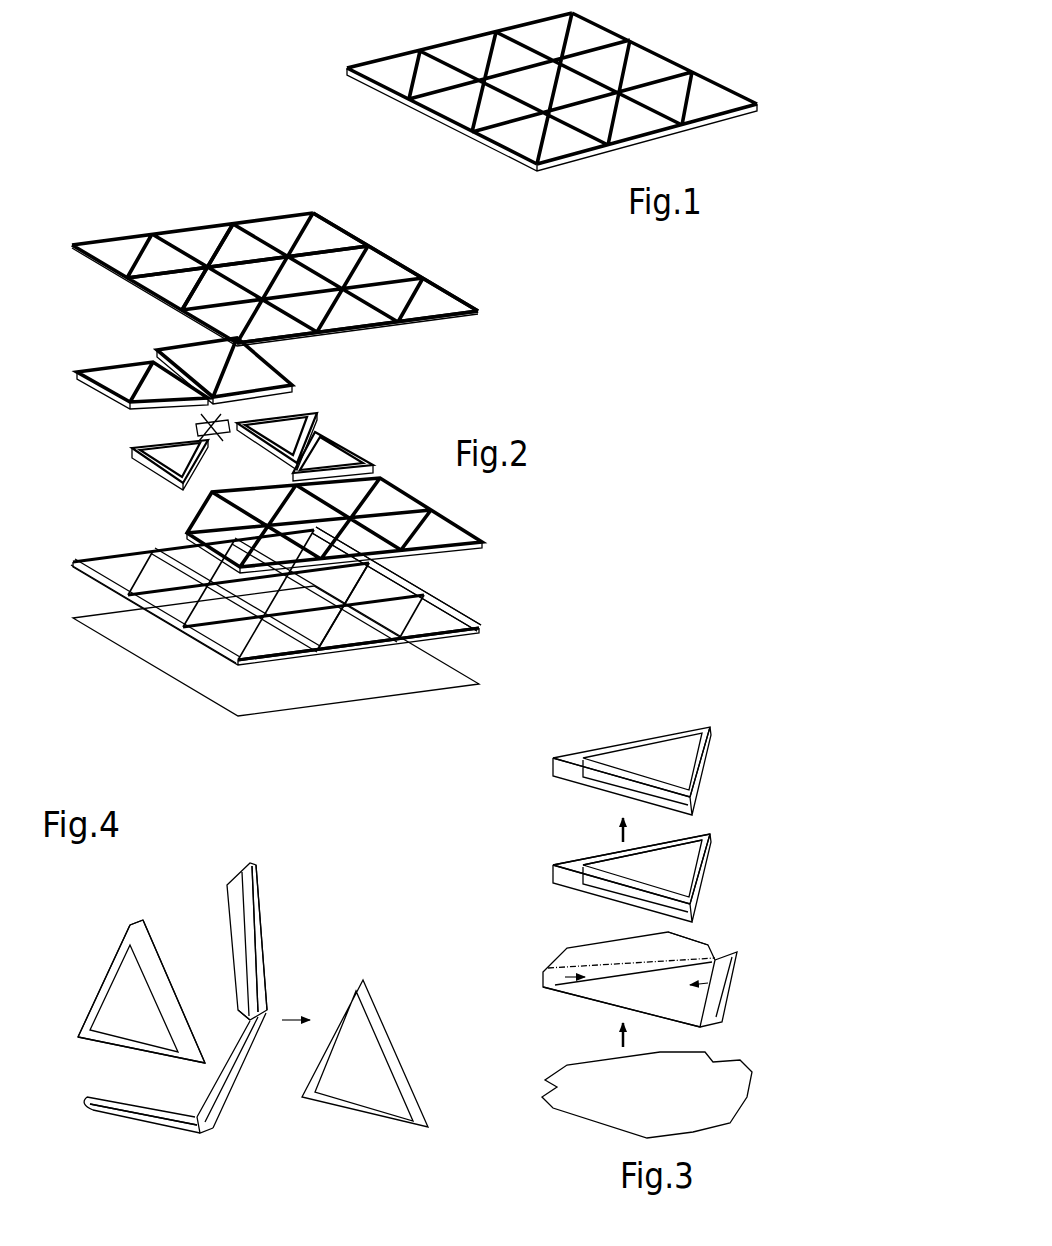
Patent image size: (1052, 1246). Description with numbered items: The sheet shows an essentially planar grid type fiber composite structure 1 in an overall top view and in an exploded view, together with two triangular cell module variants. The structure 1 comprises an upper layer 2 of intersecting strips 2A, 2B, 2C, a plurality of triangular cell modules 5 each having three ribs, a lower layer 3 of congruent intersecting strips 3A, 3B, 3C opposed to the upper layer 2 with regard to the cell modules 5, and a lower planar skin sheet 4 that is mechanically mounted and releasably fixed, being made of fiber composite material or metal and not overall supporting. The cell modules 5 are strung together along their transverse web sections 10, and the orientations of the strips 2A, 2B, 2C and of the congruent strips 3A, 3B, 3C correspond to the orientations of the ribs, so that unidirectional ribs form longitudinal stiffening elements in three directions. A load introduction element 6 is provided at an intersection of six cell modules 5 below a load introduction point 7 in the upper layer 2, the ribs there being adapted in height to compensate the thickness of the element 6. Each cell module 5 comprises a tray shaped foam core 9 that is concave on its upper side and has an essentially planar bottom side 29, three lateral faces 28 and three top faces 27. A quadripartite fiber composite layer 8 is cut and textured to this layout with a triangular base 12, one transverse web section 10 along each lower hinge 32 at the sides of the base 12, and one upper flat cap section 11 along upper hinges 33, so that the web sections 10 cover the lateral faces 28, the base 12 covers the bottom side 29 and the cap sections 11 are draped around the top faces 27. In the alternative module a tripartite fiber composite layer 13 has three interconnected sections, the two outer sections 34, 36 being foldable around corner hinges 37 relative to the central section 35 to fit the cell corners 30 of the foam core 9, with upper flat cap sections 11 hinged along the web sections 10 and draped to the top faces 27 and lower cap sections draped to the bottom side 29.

In FIG. 1, the grid type fiber composite structure 1 is at (388, 38).
In FIG. 2, the upper layer 2 is at (120, 232).
In FIG. 2, the load introduction point 7 is at (205, 262).
In FIG. 2, the strip 2A is at (313, 225).
In FIG. 2, the strip 2B is at (342, 248).
In FIG. 2, the strip 2C is at (372, 343).
In FIG. 2, the lower layer 3 is at (95, 557).
In FIG. 2, the congruent strip 3A is at (397, 573).
In FIG. 2, the congruent strip 3B is at (388, 583).
In FIG. 2, the congruent strip 3C is at (370, 645).
In FIG. 2, the planar skin sheet 4 is at (82, 610).
In FIG. 2, the triangular cell module 5 is at (127, 455).
In FIG. 4, the triangular cell module 5 is at (423, 1133).
In FIG. 3, the triangular cell module 5 is at (583, 740).
In FIG. 2, the load introduction element 6 is at (188, 425).
In FIG. 3, the quadripartite fiber composite layer 8 is at (538, 958).
In FIG. 4, the tray shaped foam core 9 is at (113, 935).
In FIG. 3, the tray shaped foam core 9 is at (555, 873).
In FIG. 4, the transverse web section 10 is at (255, 960).
In FIG. 3, the transverse web section 10 is at (597, 775).
In FIG. 4, the upper flat cap section 11 is at (228, 905).
In FIG. 3, the upper flat cap section 11 is at (693, 760).
In FIG. 3, the triangular base 12 is at (740, 983).
In FIG. 4, the tripartite fiber composite layer 13 is at (78, 1088).
In FIG. 4, the top face 27 is at (98, 1007).
In FIG. 3, the top face 27 is at (713, 857).
In FIG. 4, the lateral face 28 is at (160, 967).
In FIG. 3, the lateral face 28 is at (600, 895).
In FIG. 4, the bottom side 29 is at (142, 1022).
In FIG. 3, the bottom side 29 is at (655, 870).
In FIG. 4, the cell corner 30 is at (135, 917).
In FIG. 3, the lower hinge 32 is at (655, 978).
In FIG. 3, the upper hinge 33 is at (625, 962).
In FIG. 4, the outer section 34 is at (130, 1120).
In FIG. 4, the central section 35 is at (242, 1075).
In FIG. 4, the outer section 36 is at (265, 927).
In FIG. 4, the corner hinge 37 is at (247, 1018).